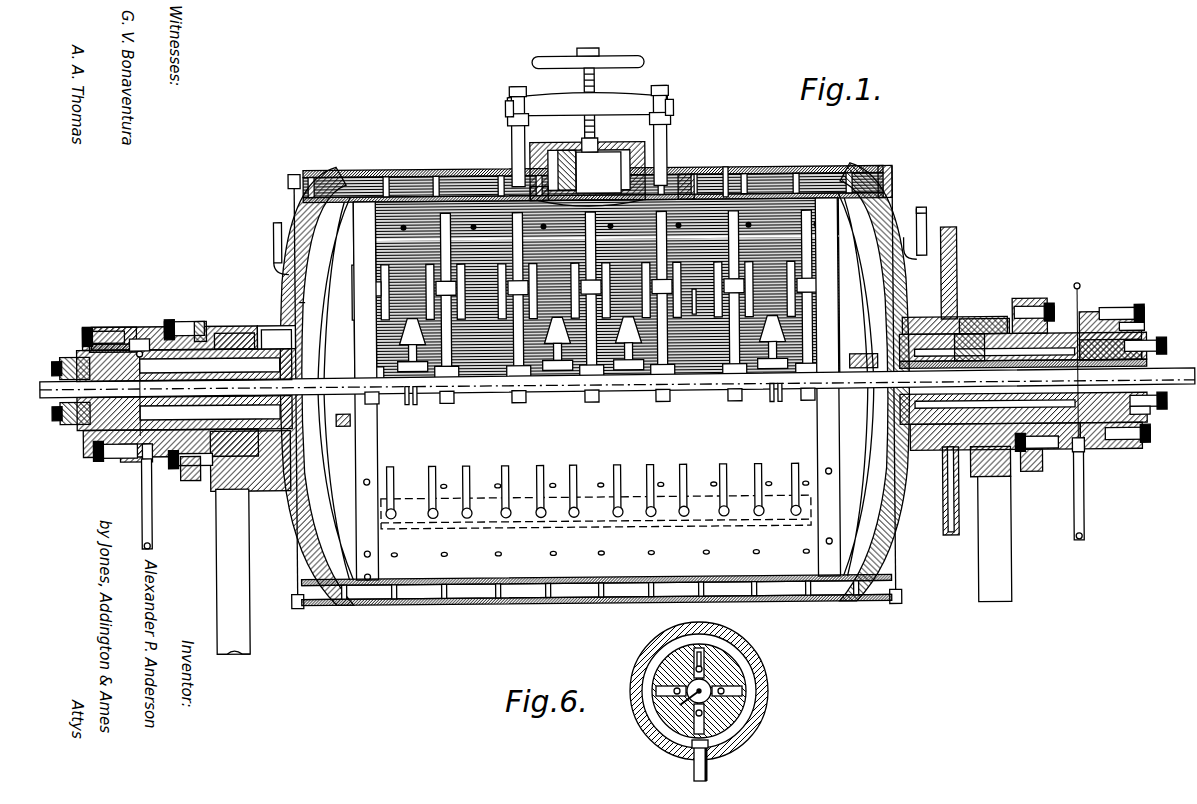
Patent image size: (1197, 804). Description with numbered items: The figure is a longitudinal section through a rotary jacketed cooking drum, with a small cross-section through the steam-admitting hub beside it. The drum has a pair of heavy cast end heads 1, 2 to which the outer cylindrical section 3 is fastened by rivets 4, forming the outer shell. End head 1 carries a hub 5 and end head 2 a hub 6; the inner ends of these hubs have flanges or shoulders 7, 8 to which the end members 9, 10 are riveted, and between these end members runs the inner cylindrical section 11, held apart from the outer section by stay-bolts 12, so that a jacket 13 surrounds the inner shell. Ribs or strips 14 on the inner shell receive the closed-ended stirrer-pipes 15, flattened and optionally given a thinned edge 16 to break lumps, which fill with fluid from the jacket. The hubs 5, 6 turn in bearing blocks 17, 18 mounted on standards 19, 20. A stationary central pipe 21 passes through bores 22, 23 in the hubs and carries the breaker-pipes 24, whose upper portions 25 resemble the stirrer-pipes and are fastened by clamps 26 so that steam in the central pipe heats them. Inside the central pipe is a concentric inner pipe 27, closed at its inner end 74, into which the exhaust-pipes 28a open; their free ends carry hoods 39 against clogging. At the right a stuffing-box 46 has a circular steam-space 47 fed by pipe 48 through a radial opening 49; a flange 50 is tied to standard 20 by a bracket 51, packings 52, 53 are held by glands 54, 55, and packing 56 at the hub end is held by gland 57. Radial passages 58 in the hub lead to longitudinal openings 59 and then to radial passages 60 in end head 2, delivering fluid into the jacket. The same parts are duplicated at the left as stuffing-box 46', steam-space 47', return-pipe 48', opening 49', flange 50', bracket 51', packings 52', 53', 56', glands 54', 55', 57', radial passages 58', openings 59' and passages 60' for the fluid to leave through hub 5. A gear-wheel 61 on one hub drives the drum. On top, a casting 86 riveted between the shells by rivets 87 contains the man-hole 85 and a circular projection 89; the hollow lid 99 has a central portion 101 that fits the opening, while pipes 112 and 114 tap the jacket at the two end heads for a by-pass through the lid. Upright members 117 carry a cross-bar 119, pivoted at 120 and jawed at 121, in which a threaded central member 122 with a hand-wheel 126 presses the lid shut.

In FIG. 1, the end head 1 is at (295, 292).
In FIG. 1, the end head 2 is at (905, 225).
In FIG. 1, the outer cylindrical section 3 is at (840, 168).
In FIG. 1, the rivets 4 is at (300, 172).
In FIG. 1, the hub 5 is at (262, 330).
In FIG. 1, the hub 6 is at (955, 322).
In FIG. 1, the peripheral flange or shoulder 7 is at (335, 652).
In FIG. 1, the peripheral flange or shoulder 8 is at (952, 458).
In FIG. 1, the end member 9 is at (340, 492).
In FIG. 1, the end member 10 is at (865, 485).
In FIG. 1, the inner cylindrical section 11 is at (430, 568).
In FIG. 1, the stay-bolts 12 is at (438, 175).
In FIG. 1, the space or jacket 13 is at (532, 600).
In FIG. 1, the ribs or strips 14 is at (535, 510).
In FIG. 1, the cutter- or stirrer-pipes 15 is at (500, 305).
In FIG. 1, the thinned edge 16 is at (430, 470).
In FIG. 1, the bearing block 17 is at (222, 345).
In FIG. 1, the bearing block 18 is at (698, 300).
In FIG. 1, the standard 19 is at (222, 562).
In FIG. 1, the standard 20 is at (1010, 552).
In FIG. 1, the central pipe 21 is at (1160, 344).
In FIG. 1, the bore 22 is at (130, 325).
In FIG. 1, the bore 23 is at (1142, 436).
In FIG. 6, the bore 23 is at (740, 702).
In FIG. 1, the breaker-pipes 24 is at (372, 300).
In FIG. 1, the upper portions of breaker-pipes 25 is at (740, 178).
In FIG. 1, the clamps 26 is at (465, 400).
In FIG. 1, the inner pipe 27 is at (730, 400).
In FIG. 1, the exhaust-pipes 28a is at (525, 395).
In FIG. 1, the hoods 39 is at (495, 330).
In FIG. 1, the stuffing-box 46 is at (1110, 319).
In FIG. 6, the stuffing-box 46 is at (719, 690).
In FIG. 1, the circular groove or steam-space 47 is at (1111, 360).
In FIG. 6, the circular groove or steam-space 47 is at (733, 691).
In FIG. 1, the pipe 48 is at (1092, 496).
In FIG. 6, the pipe 48 is at (719, 762).
In FIG. 1, the radial opening 49 is at (1095, 461).
In FIG. 6, the radial opening 49 is at (729, 749).
In FIG. 1, the flange 50 is at (1037, 463).
In FIG. 1, the brace or bracket 51 is at (1031, 483).
In FIG. 1, the packing 52 is at (1036, 297).
In FIG. 1, the packing 53 is at (1121, 293).
In FIG. 1, the gland 54 is at (1030, 294).
In FIG. 1, the gland 55 is at (1141, 308).
In FIG. 1, the packing 56 is at (1158, 392).
In FIG. 1, the gland 57 is at (1154, 416).
In FIG. 1, the radial passages 58 is at (1066, 346).
In FIG. 6, the radial passages 58 is at (725, 640).
In FIG. 1, the longitudinal openings 59 is at (971, 326).
In FIG. 6, the longitudinal openings 59 is at (653, 668).
In FIG. 1, the radial passages 60 is at (858, 351).
In FIG. 1, the gear-wheel 61 is at (960, 242).
In FIG. 1, the closed inner end of pipe 27 74 is at (776, 403).
In FIG. 1, the man-hole 85 is at (598, 172).
In FIG. 1, the casting 86 is at (560, 160).
In FIG. 1, the rivets 87 is at (692, 176).
In FIG. 1, the circular projection 89 is at (538, 178).
In FIG. 1, the lid 99 is at (598, 145).
In FIG. 1, the central hollow portion of the lid 101 is at (588, 140).
In FIG. 1, the pipe 112 is at (930, 218).
In FIG. 1, the pipe 114 is at (276, 244).
In FIG. 1, the upright members 117 is at (513, 150).
In FIG. 1, the cross-bar 119 is at (640, 100).
In FIG. 1, the pivot 120 is at (676, 106).
In FIG. 1, the jaw 121 is at (510, 102).
In FIG. 1, the central member 122 is at (598, 84).
In FIG. 1, the hand-wheel 126 is at (640, 60).
In FIG. 1, the stuffing-box 46' is at (114, 330).
In FIG. 1, the circular groove or steam-space 47' is at (149, 320).
In FIG. 1, the drain- or return-pipe 48' is at (160, 506).
In FIG. 1, the radial opening 49' is at (159, 465).
In FIG. 1, the flange 50' is at (185, 485).
In FIG. 1, the brace or bracket 51' is at (193, 488).
In FIG. 1, the packing 52' is at (184, 304).
In FIG. 1, the packing 53' is at (128, 473).
In FIG. 1, the gland 54' is at (208, 315).
In FIG. 1, the gland 55' is at (103, 308).
In FIG. 1, the packing 56' is at (70, 335).
In FIG. 1, the gland 57' is at (71, 443).
In FIG. 1, the radial passages 58' is at (139, 372).
In FIG. 1, the longitudinal openings 59' is at (234, 315).
In FIG. 1, the radial passages 60' is at (334, 426).